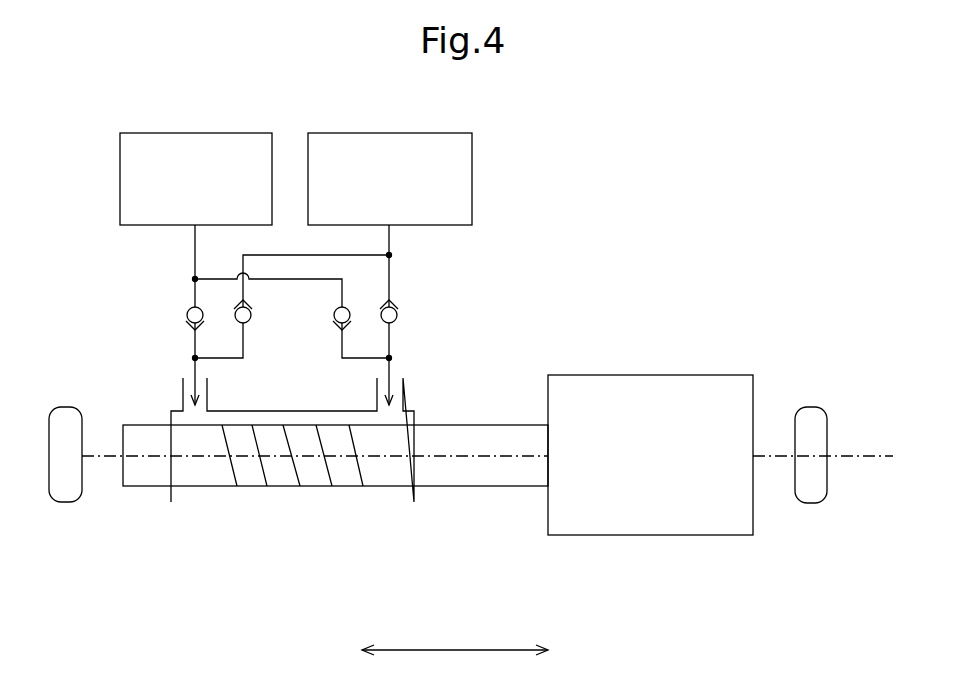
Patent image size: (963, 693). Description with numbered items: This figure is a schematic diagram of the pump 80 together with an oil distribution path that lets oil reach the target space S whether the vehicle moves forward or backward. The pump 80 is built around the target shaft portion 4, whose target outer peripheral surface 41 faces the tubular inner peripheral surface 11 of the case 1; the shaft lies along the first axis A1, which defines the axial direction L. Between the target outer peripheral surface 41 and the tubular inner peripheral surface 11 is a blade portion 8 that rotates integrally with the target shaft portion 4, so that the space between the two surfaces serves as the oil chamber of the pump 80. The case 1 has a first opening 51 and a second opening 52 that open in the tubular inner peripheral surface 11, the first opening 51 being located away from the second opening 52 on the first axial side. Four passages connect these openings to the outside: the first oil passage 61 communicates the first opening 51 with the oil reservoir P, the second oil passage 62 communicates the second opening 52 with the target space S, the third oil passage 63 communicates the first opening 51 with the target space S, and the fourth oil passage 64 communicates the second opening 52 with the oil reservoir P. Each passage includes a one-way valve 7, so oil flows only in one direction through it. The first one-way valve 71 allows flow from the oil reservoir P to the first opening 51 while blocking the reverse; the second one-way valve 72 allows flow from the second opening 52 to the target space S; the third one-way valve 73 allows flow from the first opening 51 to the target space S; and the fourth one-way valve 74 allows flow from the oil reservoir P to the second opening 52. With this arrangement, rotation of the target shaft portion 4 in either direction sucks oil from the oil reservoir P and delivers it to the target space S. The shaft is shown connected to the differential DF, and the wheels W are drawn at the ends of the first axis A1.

The case 1 is at (402, 502).
The target shaft portion 4 is at (318, 497).
The blade portion 8 is at (333, 467).
The tubular inner peripheral surface 11 is at (208, 496).
The target outer peripheral surface 41 is at (280, 488).
The first opening 51 is at (404, 372).
The second opening 52 is at (186, 368).
The first oil passage 61 is at (392, 341).
The second oil passage 62 is at (193, 341).
The third oil passage 63 is at (354, 362).
The fourth oil passage 64 is at (224, 360).
The one-way valve 7 is at (289, 288).
The first one-way valve 71 is at (400, 313).
The second one-way valve 72 is at (184, 314).
The third one-way valve 73 is at (352, 308).
The fourth one-way valve 74 is at (236, 302).
The pump 80 is at (182, 513).
The target space S is at (188, 133).
The oil reservoir P is at (379, 133).
The wheel W is at (63, 503).
The differential gear device DF is at (650, 455).
The first axis A1 is at (506, 457).
The axial direction L is at (453, 643).